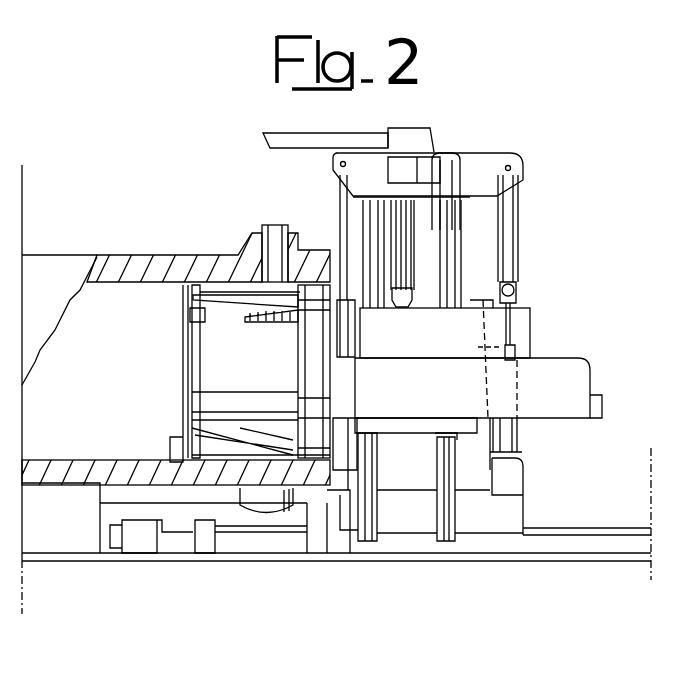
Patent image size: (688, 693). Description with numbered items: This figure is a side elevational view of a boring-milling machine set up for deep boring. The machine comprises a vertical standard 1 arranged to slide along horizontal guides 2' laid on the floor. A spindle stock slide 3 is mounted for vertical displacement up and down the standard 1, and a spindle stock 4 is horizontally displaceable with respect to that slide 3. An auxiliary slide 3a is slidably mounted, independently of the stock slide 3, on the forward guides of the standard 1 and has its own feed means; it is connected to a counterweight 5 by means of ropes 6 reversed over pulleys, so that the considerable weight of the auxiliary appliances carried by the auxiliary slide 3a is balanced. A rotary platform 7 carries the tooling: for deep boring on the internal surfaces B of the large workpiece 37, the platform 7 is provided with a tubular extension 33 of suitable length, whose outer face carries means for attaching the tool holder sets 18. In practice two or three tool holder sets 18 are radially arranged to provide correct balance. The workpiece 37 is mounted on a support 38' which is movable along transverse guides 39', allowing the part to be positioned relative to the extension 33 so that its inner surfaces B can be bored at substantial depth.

The vertical standard 1 is at (430, 210).
The ropes 6 is at (342, 200).
The spindle stock slide 3 is at (463, 335).
The auxiliary slide 3a is at (352, 442).
The counterweight 5 is at (517, 352).
The spindle stock 4 is at (568, 370).
The rotary platform 7 is at (300, 368).
The tool holder sets 18 is at (180, 310).
The tubular extension 33 is at (210, 392).
The workpiece 37 is at (138, 263).
The internal surfaces B is at (236, 283).
The horizontal guides 2' is at (587, 514).
The support 38' is at (164, 540).
The transverse guides 39' is at (272, 544).